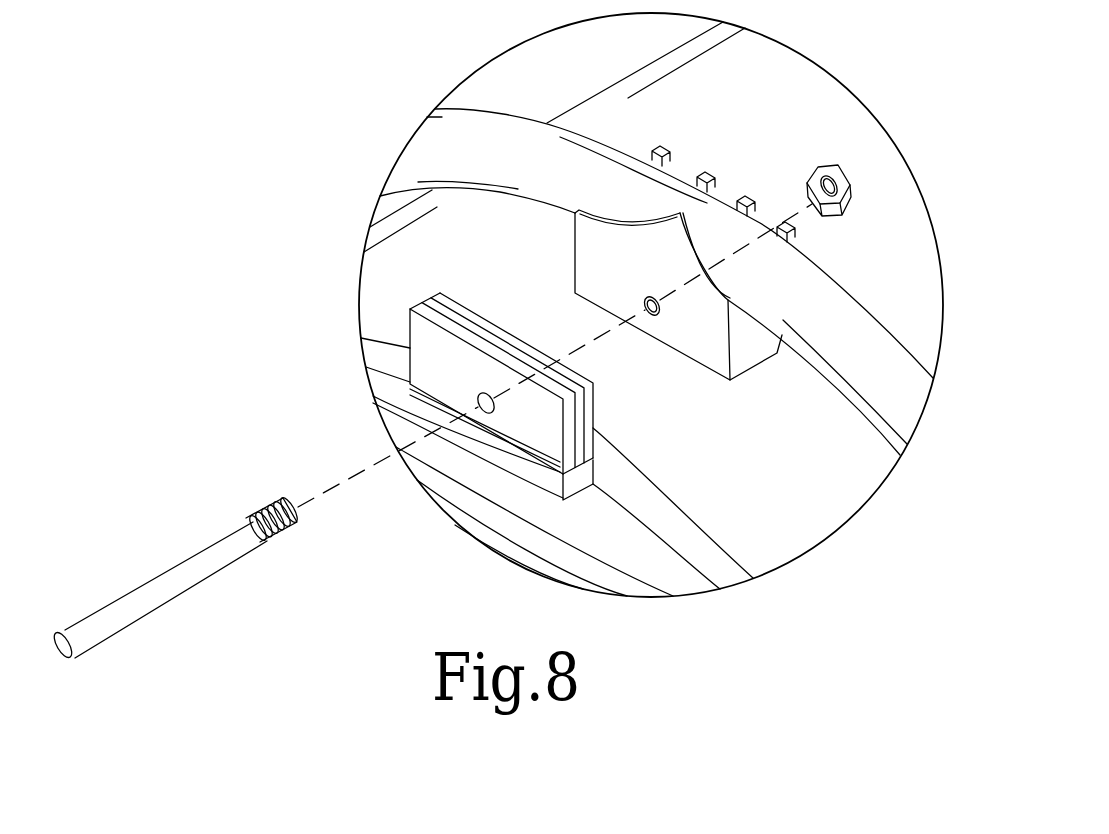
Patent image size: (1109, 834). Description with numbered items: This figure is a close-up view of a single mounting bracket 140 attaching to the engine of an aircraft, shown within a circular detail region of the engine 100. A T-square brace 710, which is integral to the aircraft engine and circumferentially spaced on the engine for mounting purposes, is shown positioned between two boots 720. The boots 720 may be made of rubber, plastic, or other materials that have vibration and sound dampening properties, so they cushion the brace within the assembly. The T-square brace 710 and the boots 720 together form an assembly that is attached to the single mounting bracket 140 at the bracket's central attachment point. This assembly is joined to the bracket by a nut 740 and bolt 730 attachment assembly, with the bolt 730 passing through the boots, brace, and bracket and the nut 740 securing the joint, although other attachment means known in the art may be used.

The rail 100 is at (448, 148).
The single mounting bracket 140 is at (708, 317).
The T-square brace 710 is at (593, 476).
The boot 720 is at (537, 443).
The bolt 730 is at (175, 583).
The nut 740 is at (828, 168).